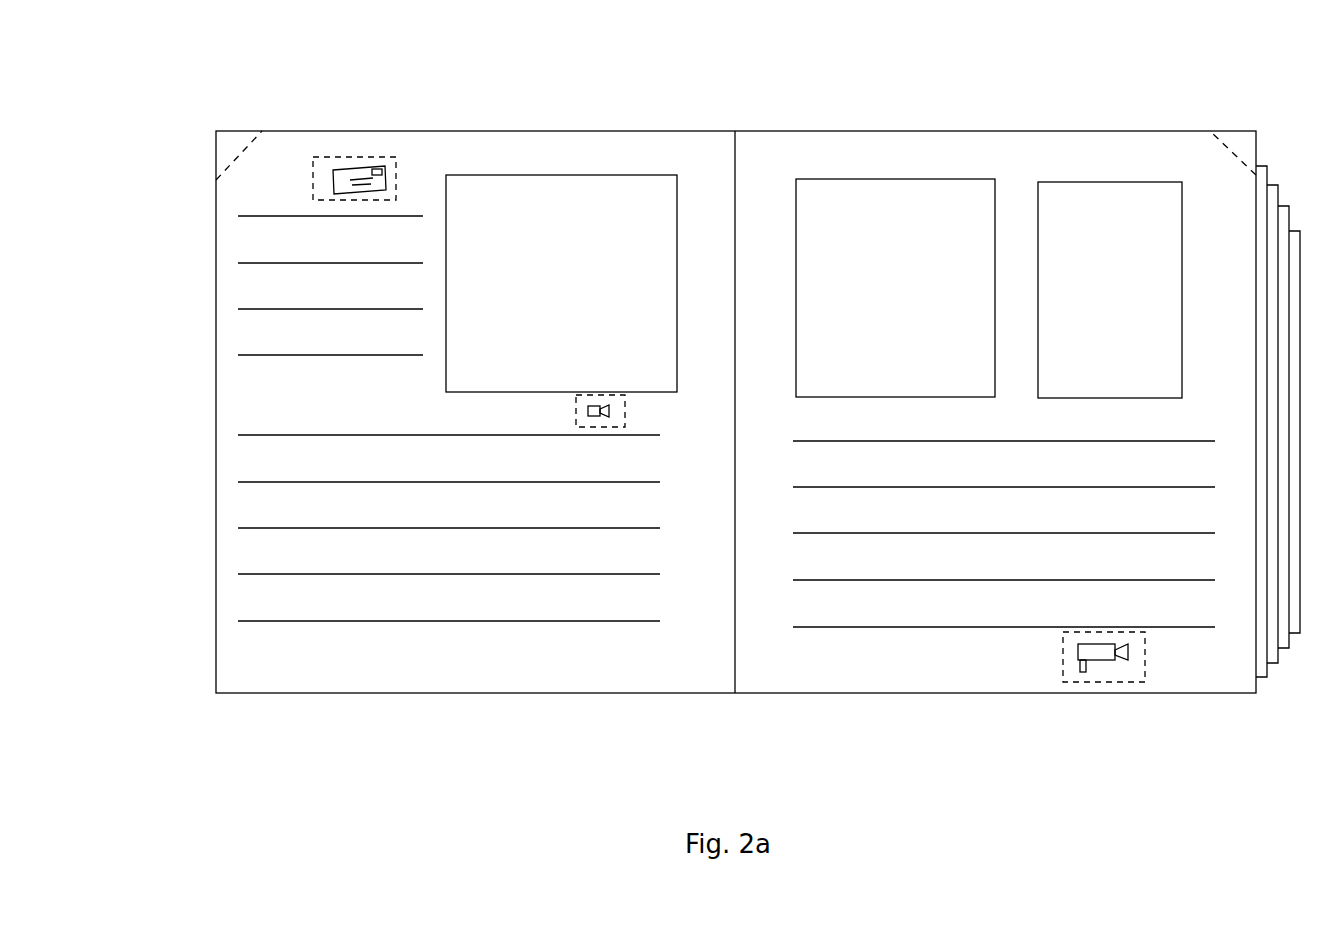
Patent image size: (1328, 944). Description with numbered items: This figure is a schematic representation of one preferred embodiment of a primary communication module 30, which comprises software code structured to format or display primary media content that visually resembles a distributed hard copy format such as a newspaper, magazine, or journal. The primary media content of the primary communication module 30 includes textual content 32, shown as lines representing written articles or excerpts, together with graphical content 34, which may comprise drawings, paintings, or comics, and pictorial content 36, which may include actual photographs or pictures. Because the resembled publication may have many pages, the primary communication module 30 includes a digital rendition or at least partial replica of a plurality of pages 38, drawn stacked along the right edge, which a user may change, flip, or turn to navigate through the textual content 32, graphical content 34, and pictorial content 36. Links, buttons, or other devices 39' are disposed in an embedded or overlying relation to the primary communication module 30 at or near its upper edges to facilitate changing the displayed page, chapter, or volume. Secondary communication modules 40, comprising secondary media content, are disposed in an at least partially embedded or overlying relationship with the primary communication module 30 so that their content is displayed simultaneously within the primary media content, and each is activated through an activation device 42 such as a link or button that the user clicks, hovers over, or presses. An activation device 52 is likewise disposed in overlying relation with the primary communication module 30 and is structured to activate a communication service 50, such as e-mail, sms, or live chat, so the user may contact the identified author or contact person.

The primary communication module 30 is at (968, 117).
The textual content 32 is at (262, 300).
The graphical content 34 is at (537, 285).
The pictorial content 36 is at (864, 291).
The pages 38 is at (1283, 670).
The links, buttons, or other devices 39' is at (725, 132).
The secondary communication module 40 is at (582, 403).
The activation device 42 is at (625, 408).
The communication service 50 is at (362, 163).
The activation device 52 is at (325, 158).